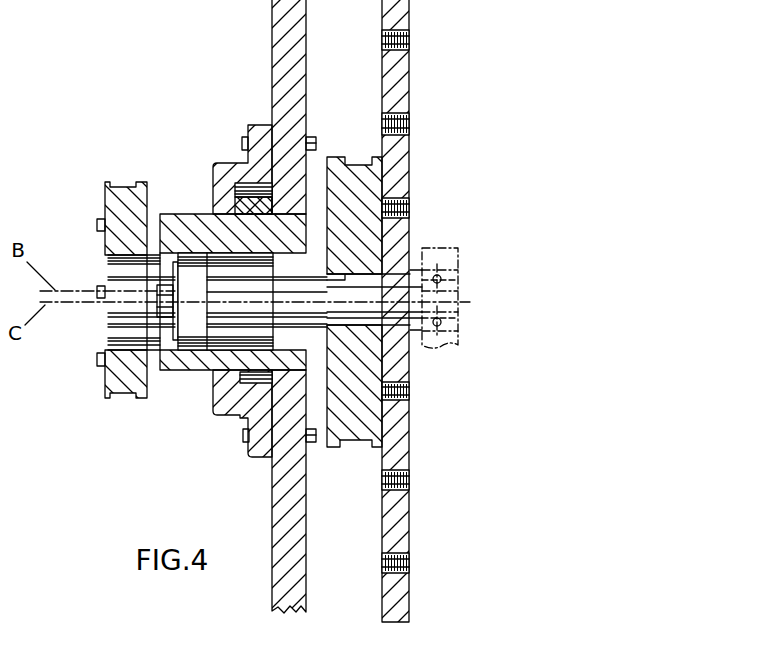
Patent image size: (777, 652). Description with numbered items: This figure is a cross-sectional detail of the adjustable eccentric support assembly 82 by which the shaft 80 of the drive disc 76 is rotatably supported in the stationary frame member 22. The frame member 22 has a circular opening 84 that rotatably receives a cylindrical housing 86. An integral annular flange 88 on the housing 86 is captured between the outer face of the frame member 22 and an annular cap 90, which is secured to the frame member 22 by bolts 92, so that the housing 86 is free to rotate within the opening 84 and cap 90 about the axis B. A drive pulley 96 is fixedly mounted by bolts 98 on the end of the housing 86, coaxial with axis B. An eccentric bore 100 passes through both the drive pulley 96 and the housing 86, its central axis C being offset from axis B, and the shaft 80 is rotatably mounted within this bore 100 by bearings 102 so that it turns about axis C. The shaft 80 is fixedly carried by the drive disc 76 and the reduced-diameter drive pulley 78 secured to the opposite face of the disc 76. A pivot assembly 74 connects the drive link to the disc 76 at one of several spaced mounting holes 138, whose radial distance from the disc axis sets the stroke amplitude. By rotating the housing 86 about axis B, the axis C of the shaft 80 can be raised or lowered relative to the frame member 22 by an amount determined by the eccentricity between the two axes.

The stationary frame member 22 is at (277, 34).
The pivot assembly 74 is at (462, 298).
The drive disc 76 is at (403, 428).
The drive pulley 78 is at (357, 433).
The shaft 80 is at (362, 297).
The adjustable eccentric support assembly 82 is at (172, 165).
The circular opening 84 is at (308, 218).
The cylindrical housing 86 is at (188, 372).
The annular flange 88 is at (238, 385).
The annular cap 90 is at (258, 452).
The bolts 92 is at (243, 143).
The drive pulley 96 is at (112, 380).
The bolts 98 is at (100, 222).
The eccentric bore 100 is at (127, 348).
The bearings 102 is at (275, 325).
The mounting holes 138 is at (409, 118).